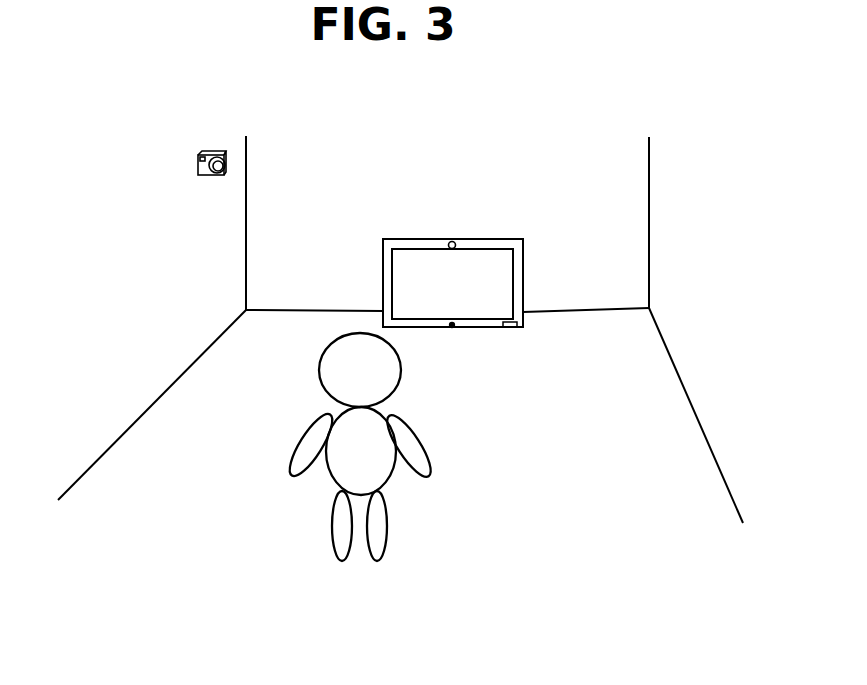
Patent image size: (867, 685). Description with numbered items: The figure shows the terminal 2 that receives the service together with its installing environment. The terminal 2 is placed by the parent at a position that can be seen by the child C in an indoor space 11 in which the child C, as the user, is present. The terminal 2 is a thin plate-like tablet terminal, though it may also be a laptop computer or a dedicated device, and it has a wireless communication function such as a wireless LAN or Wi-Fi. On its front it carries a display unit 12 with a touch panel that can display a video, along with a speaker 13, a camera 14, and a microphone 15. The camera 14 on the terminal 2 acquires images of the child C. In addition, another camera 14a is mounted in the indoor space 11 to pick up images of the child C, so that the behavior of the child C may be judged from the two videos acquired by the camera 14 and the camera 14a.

The terminal 2 is at (512, 232).
The indoor space 11 is at (143, 233).
The display unit 12 is at (410, 257).
The speaker 13 is at (523, 323).
The camera 14 is at (452, 240).
The another camera 14a is at (208, 152).
The microphone 15 is at (456, 328).
The child C is at (312, 395).